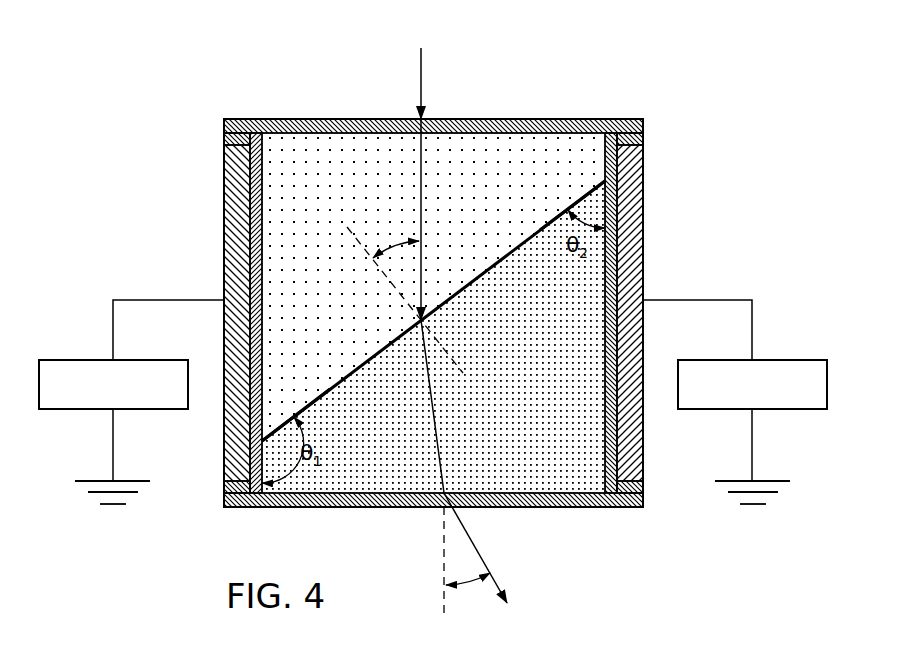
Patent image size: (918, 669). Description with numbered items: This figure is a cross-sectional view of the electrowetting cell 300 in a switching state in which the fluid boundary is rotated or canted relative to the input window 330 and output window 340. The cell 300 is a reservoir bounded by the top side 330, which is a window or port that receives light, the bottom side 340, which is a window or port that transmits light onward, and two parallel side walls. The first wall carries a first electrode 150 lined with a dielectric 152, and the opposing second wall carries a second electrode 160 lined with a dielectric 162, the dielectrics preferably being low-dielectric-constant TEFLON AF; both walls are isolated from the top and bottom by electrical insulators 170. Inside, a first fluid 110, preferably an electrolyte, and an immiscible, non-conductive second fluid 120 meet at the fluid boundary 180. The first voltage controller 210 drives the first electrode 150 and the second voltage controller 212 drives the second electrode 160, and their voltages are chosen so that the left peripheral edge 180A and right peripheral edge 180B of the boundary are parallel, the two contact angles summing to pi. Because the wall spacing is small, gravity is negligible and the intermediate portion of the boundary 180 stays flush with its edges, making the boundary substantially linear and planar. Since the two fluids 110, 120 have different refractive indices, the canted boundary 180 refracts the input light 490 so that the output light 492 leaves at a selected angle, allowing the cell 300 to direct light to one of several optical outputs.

The first fluid 110 is at (506, 422).
The second fluid 120 is at (311, 339).
The first electrode 150 is at (224, 262).
The dielectric 152 is at (258, 215).
The second electrode 160 is at (643, 226).
The dielectric 162 is at (643, 248).
The electrical insulators 170 is at (224, 136).
The fluid boundary 180 is at (458, 290).
The left peripheral edge 180A is at (318, 395).
The right peripheral edge 180B is at (585, 194).
The first voltage controller 210 is at (88, 360).
The second voltage controller 212 is at (778, 360).
The electrowetting cell 300 is at (692, 83).
The top side 330 is at (522, 119).
The bottom side 340 is at (568, 505).
The input light 490 is at (420, 82).
The output light 492 is at (505, 577).